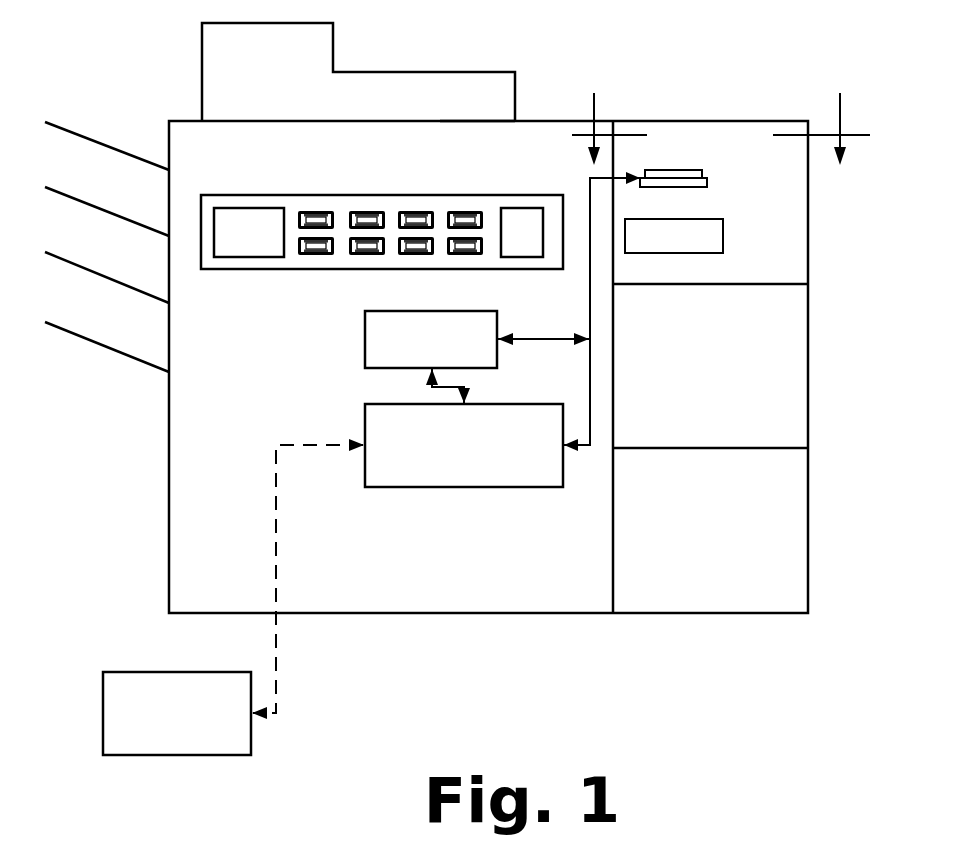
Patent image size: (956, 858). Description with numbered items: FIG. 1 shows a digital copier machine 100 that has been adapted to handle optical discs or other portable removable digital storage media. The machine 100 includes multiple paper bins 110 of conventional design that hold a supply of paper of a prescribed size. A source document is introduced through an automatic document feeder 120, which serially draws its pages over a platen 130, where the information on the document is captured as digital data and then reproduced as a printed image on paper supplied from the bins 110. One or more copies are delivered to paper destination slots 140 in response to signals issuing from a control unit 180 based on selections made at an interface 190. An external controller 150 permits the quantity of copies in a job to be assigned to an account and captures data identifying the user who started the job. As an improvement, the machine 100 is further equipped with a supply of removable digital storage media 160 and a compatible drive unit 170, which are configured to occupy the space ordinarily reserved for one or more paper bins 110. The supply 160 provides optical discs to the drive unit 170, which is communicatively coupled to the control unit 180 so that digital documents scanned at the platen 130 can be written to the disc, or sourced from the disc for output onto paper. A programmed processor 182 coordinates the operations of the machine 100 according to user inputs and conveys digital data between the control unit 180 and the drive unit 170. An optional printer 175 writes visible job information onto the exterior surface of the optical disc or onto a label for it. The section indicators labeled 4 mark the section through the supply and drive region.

The digital copier machine 100 is at (497, 656).
The paper bins 110 is at (710, 450).
The automatic document feeder 120 is at (358, 72).
The platen 130 is at (483, 138).
The paper destination slots 140 is at (118, 384).
The external controller 150 is at (233, 597).
The supply of removable digital storage media 160 is at (710, 367).
The drive unit 170 is at (672, 152).
The printer 175 is at (674, 236).
The control unit 180 is at (502, 329).
The programmed processor 182 is at (477, 357).
The interface 190 is at (317, 283).
The section line 4- 4 is at (721, 119).